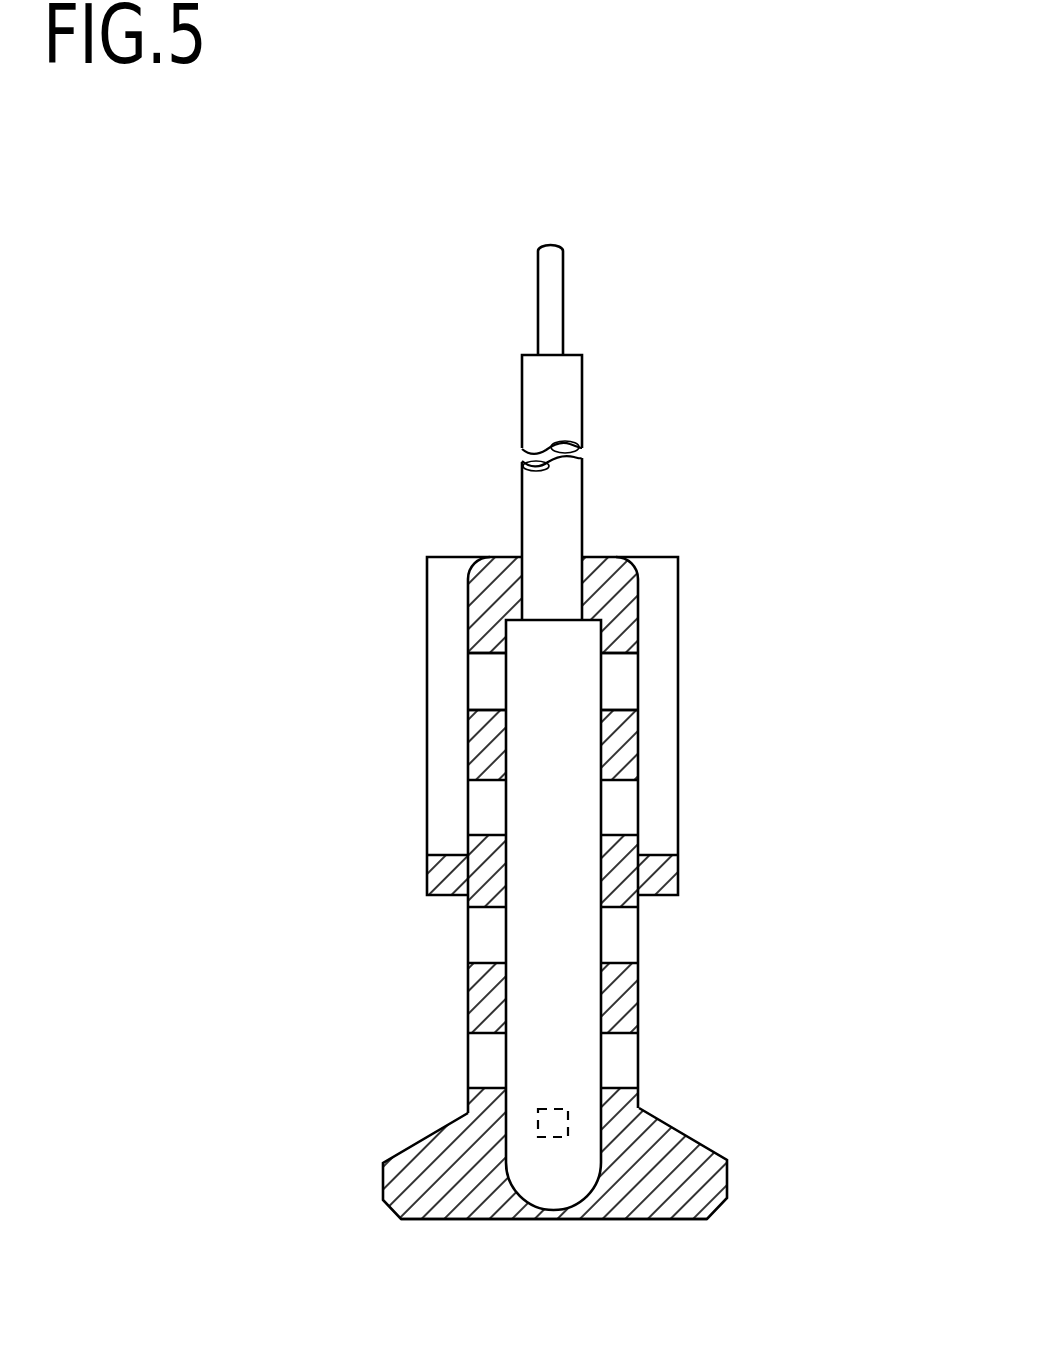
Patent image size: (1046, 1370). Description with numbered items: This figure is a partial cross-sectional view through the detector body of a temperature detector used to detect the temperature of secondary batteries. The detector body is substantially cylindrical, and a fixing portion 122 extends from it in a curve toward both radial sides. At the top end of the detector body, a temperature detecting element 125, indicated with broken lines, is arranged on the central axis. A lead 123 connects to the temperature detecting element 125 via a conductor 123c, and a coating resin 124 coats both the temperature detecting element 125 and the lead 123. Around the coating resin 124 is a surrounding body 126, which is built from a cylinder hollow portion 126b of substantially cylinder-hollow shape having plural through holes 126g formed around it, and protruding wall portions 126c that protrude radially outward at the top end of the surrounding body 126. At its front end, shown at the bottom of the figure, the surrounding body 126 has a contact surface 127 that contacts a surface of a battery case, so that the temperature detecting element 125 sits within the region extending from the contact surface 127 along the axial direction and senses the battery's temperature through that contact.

The fixing portion 122 is at (658, 752).
The lead 123 is at (557, 403).
The conductor 123c is at (548, 298).
The coating resin 124 is at (580, 930).
The temperature detecting element 125 is at (568, 1128).
The surrounding body 126 is at (617, 1003).
The cylinder hollow portion 126b is at (484, 1004).
The protruding wall portion 126c is at (410, 1160).
The through hole 126g is at (492, 708).
The contact surface 127 is at (642, 1219).